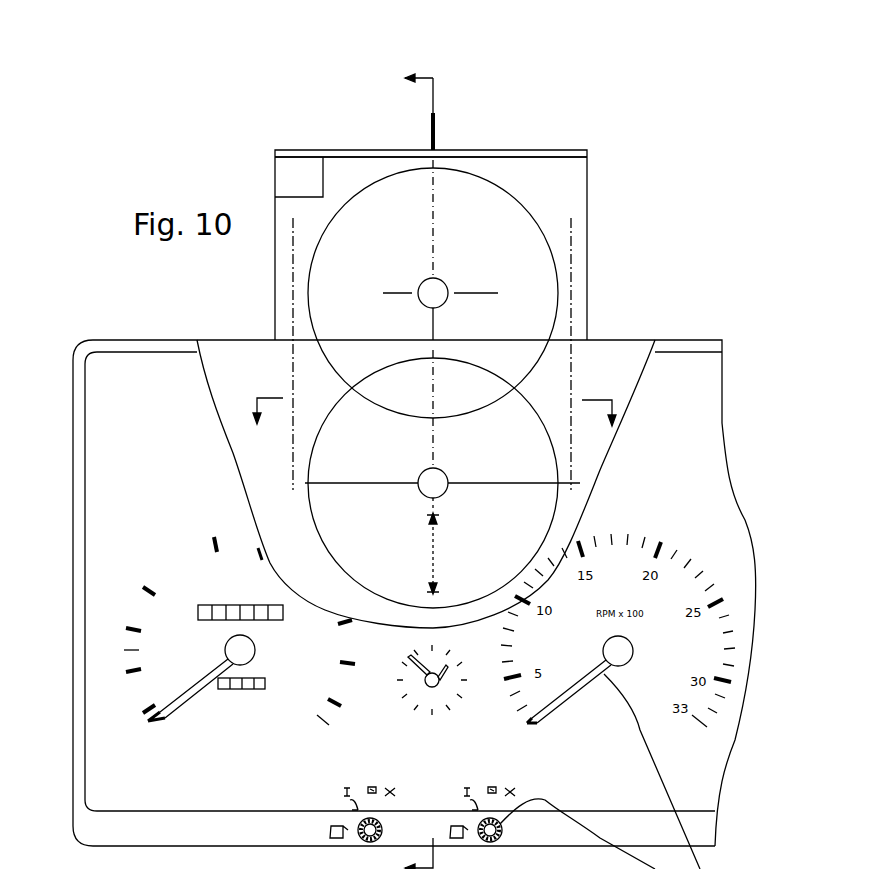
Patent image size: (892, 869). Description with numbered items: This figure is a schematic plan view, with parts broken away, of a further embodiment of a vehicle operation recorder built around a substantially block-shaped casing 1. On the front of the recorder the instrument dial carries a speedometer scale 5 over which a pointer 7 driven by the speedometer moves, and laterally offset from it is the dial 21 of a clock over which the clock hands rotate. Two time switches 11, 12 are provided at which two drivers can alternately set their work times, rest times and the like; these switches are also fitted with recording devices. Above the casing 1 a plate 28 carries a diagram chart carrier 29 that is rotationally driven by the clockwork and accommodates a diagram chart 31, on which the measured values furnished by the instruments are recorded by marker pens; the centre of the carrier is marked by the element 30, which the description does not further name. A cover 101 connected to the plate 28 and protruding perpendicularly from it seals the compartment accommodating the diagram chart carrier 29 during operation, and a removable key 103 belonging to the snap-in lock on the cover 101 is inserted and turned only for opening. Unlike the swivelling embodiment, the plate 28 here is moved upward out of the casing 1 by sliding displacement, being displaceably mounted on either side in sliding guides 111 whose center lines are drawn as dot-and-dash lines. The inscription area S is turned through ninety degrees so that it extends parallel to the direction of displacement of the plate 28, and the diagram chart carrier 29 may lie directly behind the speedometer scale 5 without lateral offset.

The casing 1 is at (145, 333).
The speedometer scale 5 is at (185, 545).
The pointer 7 is at (200, 688).
The time switch 11 is at (359, 822).
The time switch 12 is at (437, 466).
The dial 21 is at (401, 727).
The plate 28 is at (549, 178).
The diagram chart carrier 29 is at (437, 287).
The shaft axis 30 is at (428, 292).
The diagram chart 31 is at (490, 218).
The cover 101 is at (502, 150).
The key 103 is at (436, 128).
The sliding guides 111 is at (282, 230).
The inscription area S is at (436, 548).